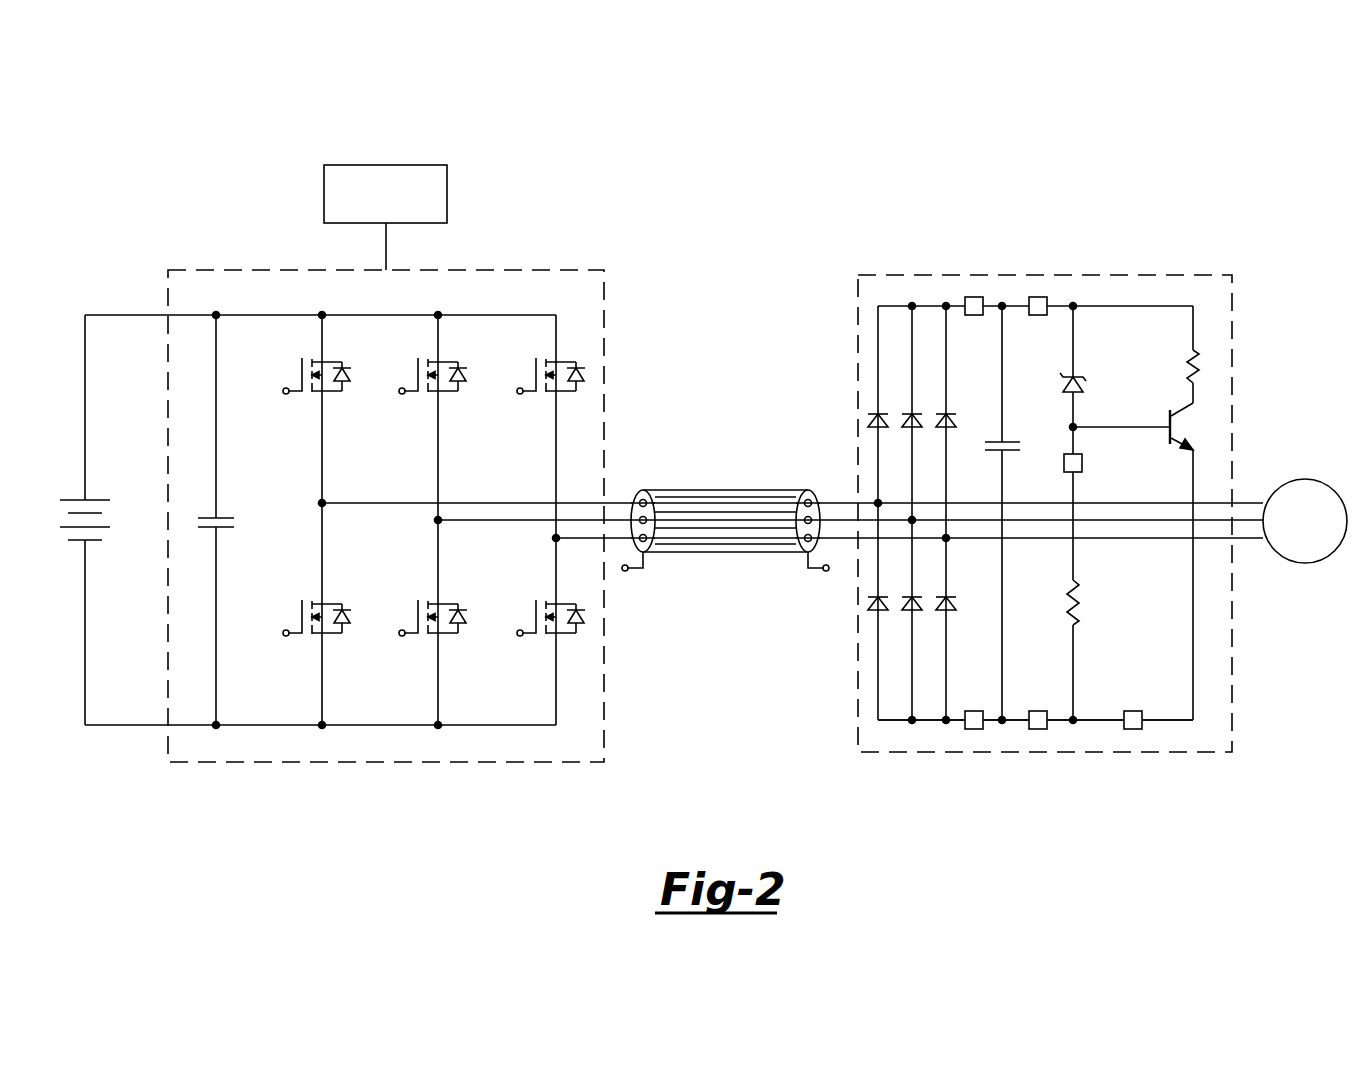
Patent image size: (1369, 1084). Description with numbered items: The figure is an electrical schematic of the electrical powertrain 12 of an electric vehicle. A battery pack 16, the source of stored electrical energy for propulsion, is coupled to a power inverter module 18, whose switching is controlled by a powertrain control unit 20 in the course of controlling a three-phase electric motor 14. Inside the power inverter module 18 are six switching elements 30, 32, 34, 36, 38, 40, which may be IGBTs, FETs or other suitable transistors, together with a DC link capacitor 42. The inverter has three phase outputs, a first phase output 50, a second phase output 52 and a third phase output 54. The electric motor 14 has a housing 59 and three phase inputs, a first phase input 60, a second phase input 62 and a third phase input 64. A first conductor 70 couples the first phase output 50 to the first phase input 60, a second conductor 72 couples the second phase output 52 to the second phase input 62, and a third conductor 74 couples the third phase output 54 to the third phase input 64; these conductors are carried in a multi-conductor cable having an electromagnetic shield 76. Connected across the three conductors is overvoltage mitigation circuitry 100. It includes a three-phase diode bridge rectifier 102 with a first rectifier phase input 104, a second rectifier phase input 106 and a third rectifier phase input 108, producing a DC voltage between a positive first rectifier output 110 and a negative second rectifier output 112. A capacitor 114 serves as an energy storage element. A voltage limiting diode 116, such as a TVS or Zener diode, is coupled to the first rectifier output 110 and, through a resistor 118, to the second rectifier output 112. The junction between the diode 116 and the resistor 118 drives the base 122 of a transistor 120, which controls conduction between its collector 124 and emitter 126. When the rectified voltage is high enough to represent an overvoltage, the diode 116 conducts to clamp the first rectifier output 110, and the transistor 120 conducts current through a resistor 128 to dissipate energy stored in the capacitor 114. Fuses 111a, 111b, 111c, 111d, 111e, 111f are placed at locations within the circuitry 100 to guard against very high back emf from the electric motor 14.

The electrical powertrain 12 is at (117, 124).
The electric motor 14 is at (1333, 483).
The battery pack 16 is at (75, 498).
The power inverter module 18 is at (208, 268).
The powertrain control unit 20 is at (386, 162).
The switching element 30 is at (330, 394).
The switching element 32 is at (330, 636).
The switching element 34 is at (446, 394).
The switching element 36 is at (446, 636).
The switching element 38 is at (564, 394).
The switching element 40 is at (564, 636).
The DC link capacitor 42 is at (210, 517).
The first phase output 50 is at (722, 528).
The second phase output 52 is at (520, 518).
The third phase output 54 is at (575, 540).
The housing 59 is at (1340, 554).
The first phase input 60 is at (1268, 494).
The second phase input 62 is at (1262, 522).
The third phase input 64 is at (1262, 550).
The first conductor 70 is at (677, 496).
The second conductor 72 is at (725, 511).
The third conductor 74 is at (724, 545).
The electromagnetic shield 76 is at (683, 553).
The circuitry 100 is at (1190, 273).
The rectifier 102 is at (890, 291).
The first rectifier phase input 104 is at (878, 488).
The second rectifier phase input 106 is at (915, 517).
The third rectifier phase input 108 is at (948, 542).
The first rectifier output 110 is at (930, 291).
The fuse 111a is at (972, 296).
The fuse 111b is at (1036, 296).
The fuse 111c is at (975, 730).
The fuse 111d is at (1040, 730).
The fuse 111e is at (1068, 455).
The fuse 111f is at (1135, 730).
The second rectifier output 112 is at (922, 735).
The capacitor 114 is at (990, 443).
The diode 116 is at (1078, 372).
The resistor 118 is at (1068, 605).
The transistor 120 is at (1190, 529).
The base 122 is at (1165, 425).
The collector 124 is at (1178, 405).
The emitter 126 is at (1178, 444).
The resistor 128 is at (1200, 346).